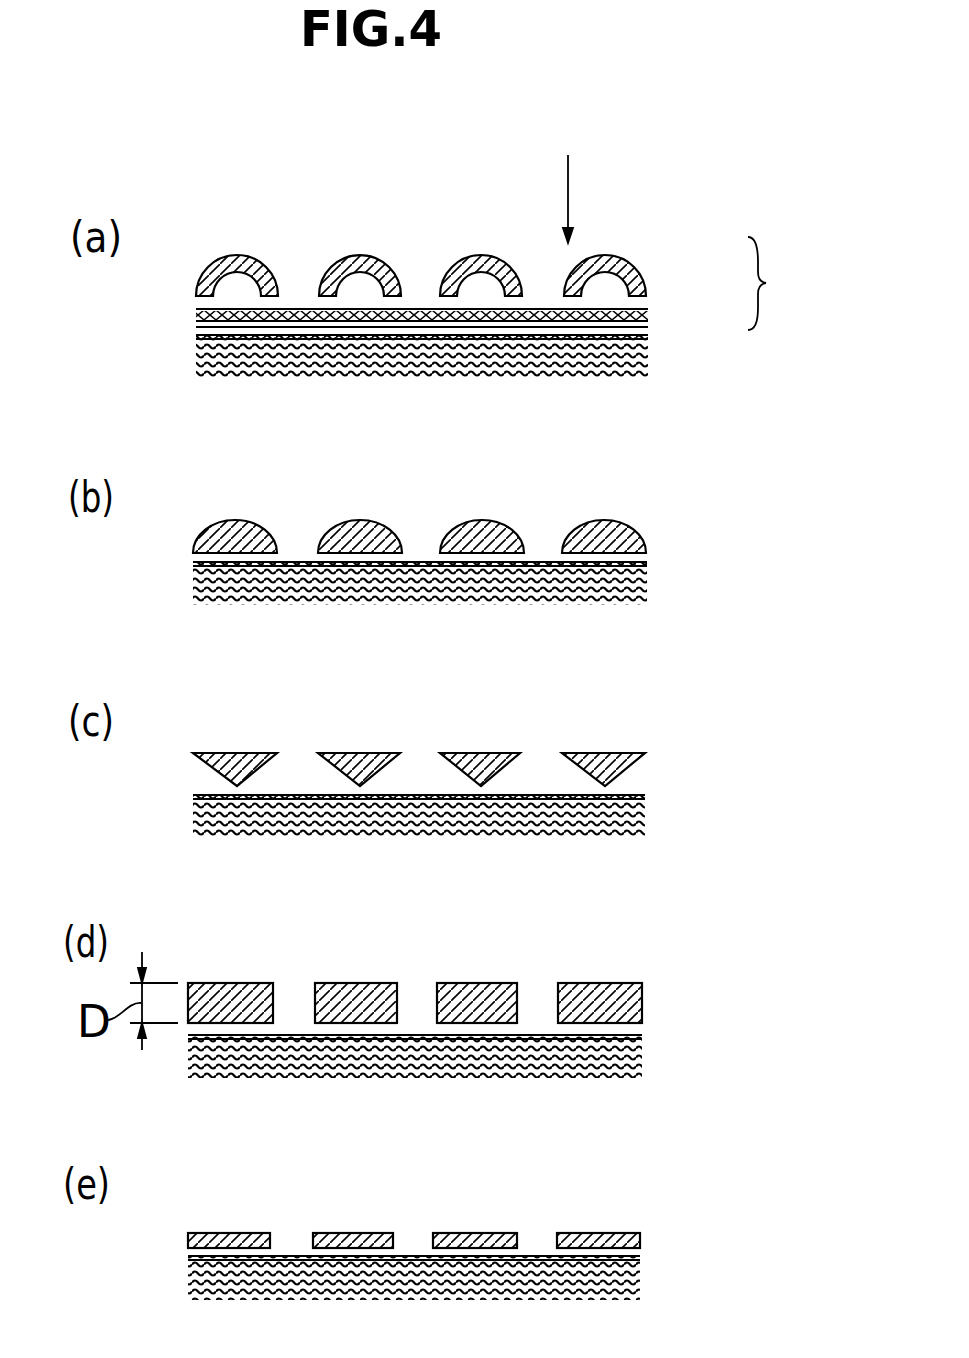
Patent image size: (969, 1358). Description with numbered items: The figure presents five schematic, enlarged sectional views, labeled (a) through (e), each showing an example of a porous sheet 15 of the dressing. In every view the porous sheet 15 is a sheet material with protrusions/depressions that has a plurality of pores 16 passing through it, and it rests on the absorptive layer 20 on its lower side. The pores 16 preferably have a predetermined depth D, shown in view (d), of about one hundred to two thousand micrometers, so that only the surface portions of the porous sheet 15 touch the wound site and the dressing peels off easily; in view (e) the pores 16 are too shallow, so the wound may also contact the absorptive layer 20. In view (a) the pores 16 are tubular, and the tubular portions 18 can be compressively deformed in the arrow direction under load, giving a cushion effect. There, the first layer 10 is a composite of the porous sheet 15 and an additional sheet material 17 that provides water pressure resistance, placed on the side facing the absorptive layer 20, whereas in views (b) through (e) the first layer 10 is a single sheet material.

The first layer 10 is at (777, 283).
The porous sheet 15 is at (646, 278).
The pores 16 is at (547, 292).
The additional sheet material 17 is at (648, 321).
The tubular portions 18 is at (562, 275).
The absorptive layer 20 is at (648, 357).